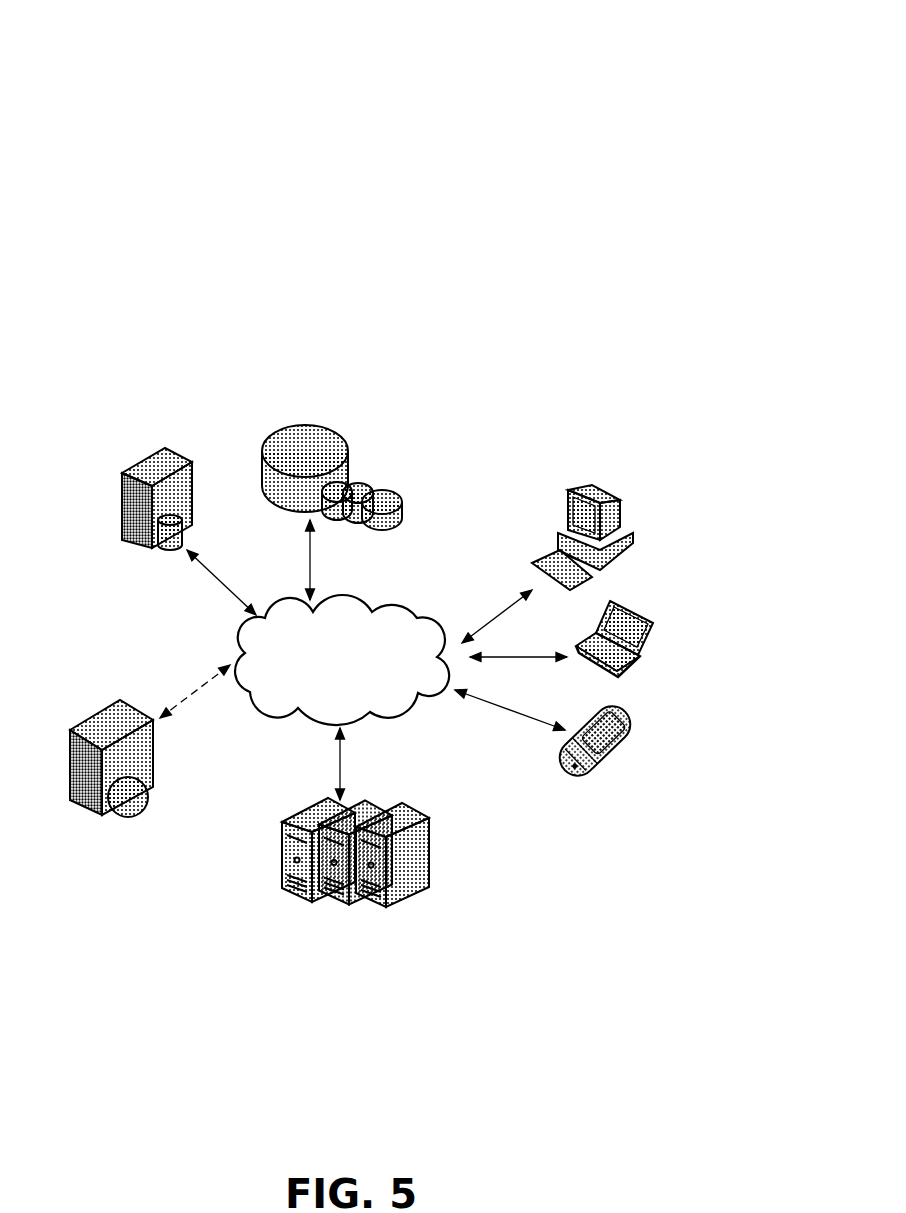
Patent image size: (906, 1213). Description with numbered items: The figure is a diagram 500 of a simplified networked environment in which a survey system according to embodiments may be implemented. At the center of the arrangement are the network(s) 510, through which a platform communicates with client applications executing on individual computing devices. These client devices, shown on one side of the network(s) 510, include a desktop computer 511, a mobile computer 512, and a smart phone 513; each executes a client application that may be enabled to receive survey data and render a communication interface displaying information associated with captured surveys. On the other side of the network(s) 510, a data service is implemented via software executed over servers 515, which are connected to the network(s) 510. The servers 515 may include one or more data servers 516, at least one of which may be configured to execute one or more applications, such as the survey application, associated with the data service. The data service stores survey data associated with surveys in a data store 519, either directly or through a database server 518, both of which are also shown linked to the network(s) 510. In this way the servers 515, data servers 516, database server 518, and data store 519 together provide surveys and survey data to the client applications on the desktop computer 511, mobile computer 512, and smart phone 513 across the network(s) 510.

The diagram 500 is at (700, 48).
The network(s) 510 is at (343, 588).
The desktop computer 511 is at (620, 478).
The mobile computer 512 is at (655, 598).
The smart phone 513 is at (625, 710).
The servers 515 is at (310, 800).
The data servers 516 is at (92, 707).
The database server 518 is at (160, 556).
The data store 519 is at (316, 405).